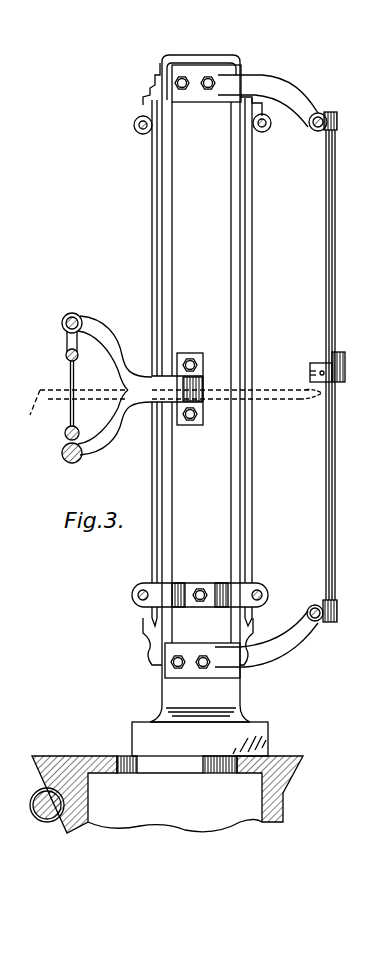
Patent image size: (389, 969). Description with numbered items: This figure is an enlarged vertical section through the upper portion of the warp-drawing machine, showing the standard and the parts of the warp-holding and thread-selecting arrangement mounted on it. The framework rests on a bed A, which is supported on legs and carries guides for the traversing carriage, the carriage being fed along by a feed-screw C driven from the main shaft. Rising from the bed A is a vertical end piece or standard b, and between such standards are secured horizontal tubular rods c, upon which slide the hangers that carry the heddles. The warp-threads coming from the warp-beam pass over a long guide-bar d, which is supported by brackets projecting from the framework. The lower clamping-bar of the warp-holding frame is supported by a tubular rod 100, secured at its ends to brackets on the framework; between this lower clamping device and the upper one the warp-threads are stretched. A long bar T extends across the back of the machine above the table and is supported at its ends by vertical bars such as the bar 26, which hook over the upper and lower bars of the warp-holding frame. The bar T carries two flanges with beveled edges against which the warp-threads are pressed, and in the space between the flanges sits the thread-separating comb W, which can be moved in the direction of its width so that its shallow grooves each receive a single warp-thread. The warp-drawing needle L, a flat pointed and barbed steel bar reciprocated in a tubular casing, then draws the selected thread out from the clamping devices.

The vertical end piece or standard b is at (200, 405).
The horizontal tubular rod c is at (135, 125).
The guide-bar d is at (324, 119).
The vertical bar 26 is at (334, 268).
The thread-separating comb W is at (308, 373).
The long bar T is at (346, 367).
The warp-drawing needle L is at (169, 388).
The tubular rod 100 is at (322, 620).
The bed A is at (167, 794).
The feed-screw C is at (42, 821).